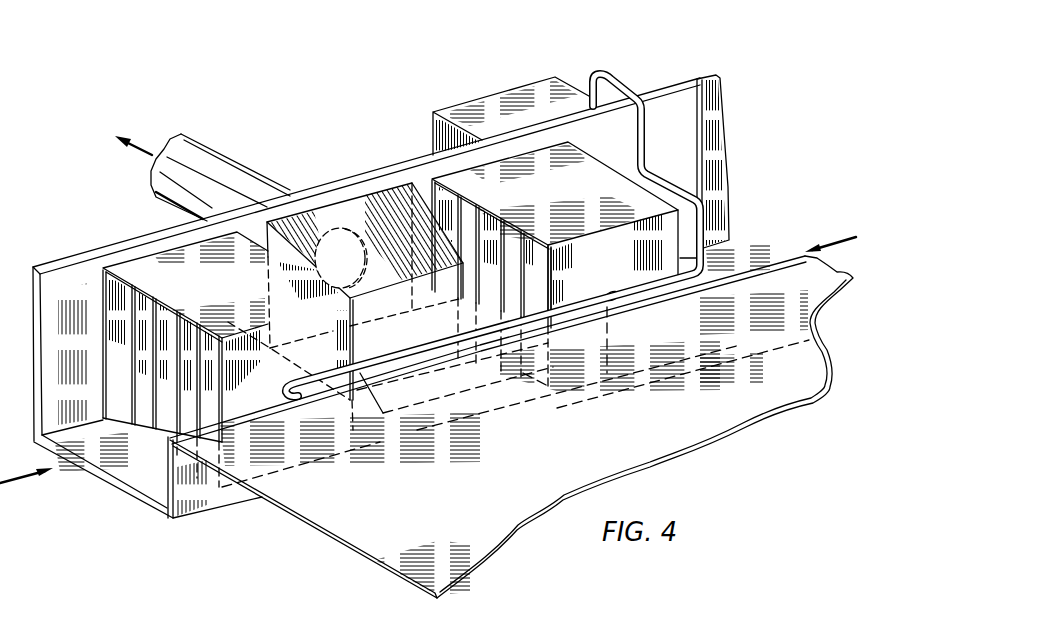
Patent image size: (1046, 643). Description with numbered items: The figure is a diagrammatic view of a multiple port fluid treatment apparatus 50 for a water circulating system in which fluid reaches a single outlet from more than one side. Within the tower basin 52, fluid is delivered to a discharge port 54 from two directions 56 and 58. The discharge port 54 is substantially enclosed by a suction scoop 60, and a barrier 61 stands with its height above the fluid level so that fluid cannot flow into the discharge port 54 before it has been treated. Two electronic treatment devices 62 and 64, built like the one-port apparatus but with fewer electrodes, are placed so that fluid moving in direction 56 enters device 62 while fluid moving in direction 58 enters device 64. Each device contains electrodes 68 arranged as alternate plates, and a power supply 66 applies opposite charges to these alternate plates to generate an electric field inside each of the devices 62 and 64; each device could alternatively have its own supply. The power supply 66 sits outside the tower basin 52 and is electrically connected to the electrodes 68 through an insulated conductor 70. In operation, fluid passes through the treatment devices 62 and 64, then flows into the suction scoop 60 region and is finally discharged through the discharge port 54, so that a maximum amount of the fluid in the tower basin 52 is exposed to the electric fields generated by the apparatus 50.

The multiple port fluid treatment apparatus 50 is at (517, 418).
The tower basin 52 is at (716, 167).
The discharge port 54 is at (223, 167).
The direction 56 is at (836, 237).
The direction 58 is at (23, 485).
The suction scoop 60 is at (365, 259).
The barrier 61 is at (384, 285).
The electronic treatment device 62 is at (533, 173).
The electronic treatment device 64 is at (152, 277).
The power supply 66 is at (470, 110).
The electrodes 68 is at (187, 320).
The insulated conductor 70 is at (643, 140).